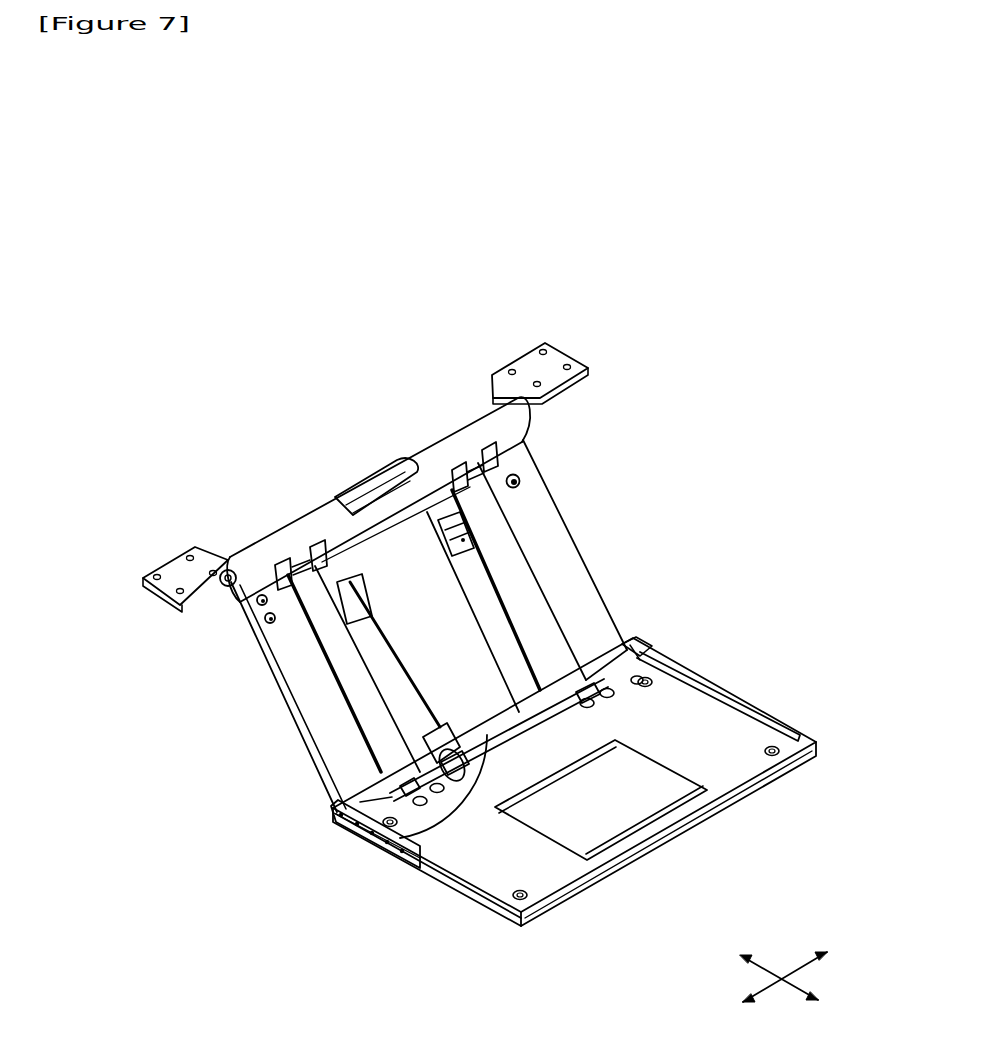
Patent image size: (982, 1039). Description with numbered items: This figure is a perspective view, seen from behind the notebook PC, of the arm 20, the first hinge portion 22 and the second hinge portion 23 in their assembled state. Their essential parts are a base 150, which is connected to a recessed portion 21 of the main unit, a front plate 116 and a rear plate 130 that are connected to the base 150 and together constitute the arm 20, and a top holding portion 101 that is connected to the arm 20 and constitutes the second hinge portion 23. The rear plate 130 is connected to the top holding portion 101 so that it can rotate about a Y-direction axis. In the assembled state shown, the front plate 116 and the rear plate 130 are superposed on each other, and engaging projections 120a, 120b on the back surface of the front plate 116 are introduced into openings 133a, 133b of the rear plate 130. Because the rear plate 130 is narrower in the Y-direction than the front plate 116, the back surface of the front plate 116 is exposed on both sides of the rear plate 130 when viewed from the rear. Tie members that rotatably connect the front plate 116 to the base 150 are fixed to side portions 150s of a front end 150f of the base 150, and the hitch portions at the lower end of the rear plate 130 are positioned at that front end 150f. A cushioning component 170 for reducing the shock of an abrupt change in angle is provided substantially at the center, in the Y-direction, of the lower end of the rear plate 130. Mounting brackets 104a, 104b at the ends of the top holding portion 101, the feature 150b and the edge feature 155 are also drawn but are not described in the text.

The arm 20 is at (618, 541).
The recessed portion 21 is at (727, 785).
The first hinge portion 22 is at (543, 713).
The second hinge portion 23 is at (470, 413).
The top holding portion 101 is at (432, 440).
The mounting bracket 104a is at (563, 357).
The mounting bracket 104b is at (175, 575).
The front plate 116 is at (303, 710).
The engaging projection 120a is at (480, 560).
The engaging projection 120b is at (332, 548).
The rear plate 130 is at (303, 733).
The opening 133a is at (490, 588).
The opening 133b is at (353, 620).
The base 150 is at (488, 860).
The rear flange 150b is at (645, 663).
The side portion 150s is at (700, 673).
The front end 150f is at (593, 885).
The edge lip 155 is at (662, 833).
The cushioning component 170 is at (395, 839).